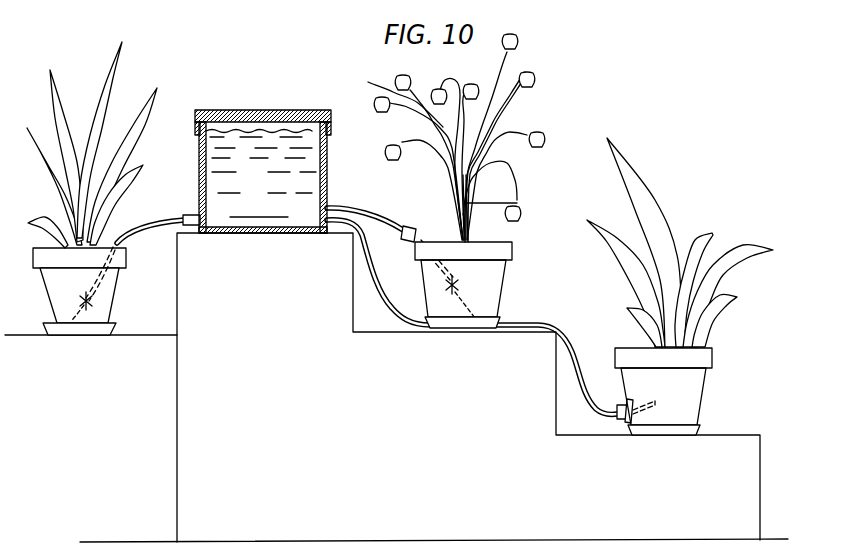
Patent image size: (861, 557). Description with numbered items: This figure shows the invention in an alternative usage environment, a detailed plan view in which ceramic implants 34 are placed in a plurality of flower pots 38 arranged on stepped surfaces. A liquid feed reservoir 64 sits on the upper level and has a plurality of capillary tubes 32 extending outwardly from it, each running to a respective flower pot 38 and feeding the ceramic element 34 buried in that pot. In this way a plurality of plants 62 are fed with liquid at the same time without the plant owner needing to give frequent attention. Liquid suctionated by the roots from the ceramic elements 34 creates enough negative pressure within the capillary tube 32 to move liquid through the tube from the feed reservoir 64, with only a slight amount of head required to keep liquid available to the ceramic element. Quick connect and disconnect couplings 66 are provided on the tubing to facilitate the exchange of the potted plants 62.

The capillary tube 32 is at (158, 220).
The ceramic implant 34 is at (91, 333).
The flower pot 38 is at (508, 250).
The plant 62 is at (515, 203).
The liquid feed reservoir 64 is at (328, 172).
The quick connect and disconnect coupling 66 is at (410, 226).